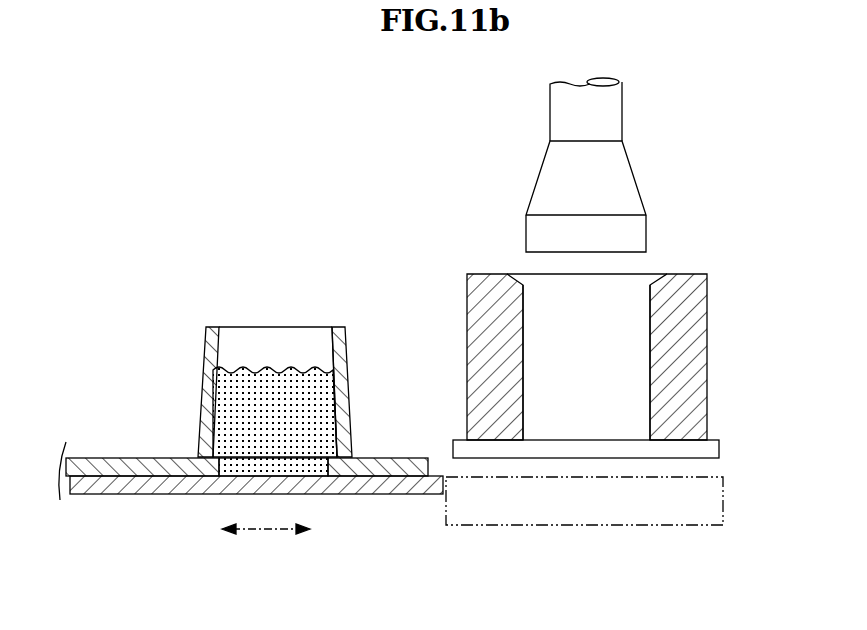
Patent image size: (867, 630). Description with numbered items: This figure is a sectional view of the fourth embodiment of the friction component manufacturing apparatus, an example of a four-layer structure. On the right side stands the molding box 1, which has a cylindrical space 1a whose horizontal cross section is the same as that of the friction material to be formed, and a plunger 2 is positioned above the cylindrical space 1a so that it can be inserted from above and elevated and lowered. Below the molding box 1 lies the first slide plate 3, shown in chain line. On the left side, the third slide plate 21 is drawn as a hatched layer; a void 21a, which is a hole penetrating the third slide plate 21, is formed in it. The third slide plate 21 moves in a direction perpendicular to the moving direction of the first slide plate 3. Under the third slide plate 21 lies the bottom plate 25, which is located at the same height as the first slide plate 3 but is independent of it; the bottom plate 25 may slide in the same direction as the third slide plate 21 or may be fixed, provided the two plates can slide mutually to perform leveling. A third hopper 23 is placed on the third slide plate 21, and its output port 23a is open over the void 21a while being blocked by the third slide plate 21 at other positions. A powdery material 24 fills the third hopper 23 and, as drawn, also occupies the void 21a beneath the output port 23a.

The molding box 1 is at (693, 345).
The cylindrical space 1a is at (540, 308).
The plunger 2 is at (613, 170).
The first slide plate 3 is at (583, 525).
The third slide plate 21 is at (167, 458).
The void 21a is at (315, 470).
The third hopper 23 is at (247, 328).
The output port 23a is at (335, 447).
The powdery material 24 is at (240, 380).
The bottom plate 25 is at (187, 494).